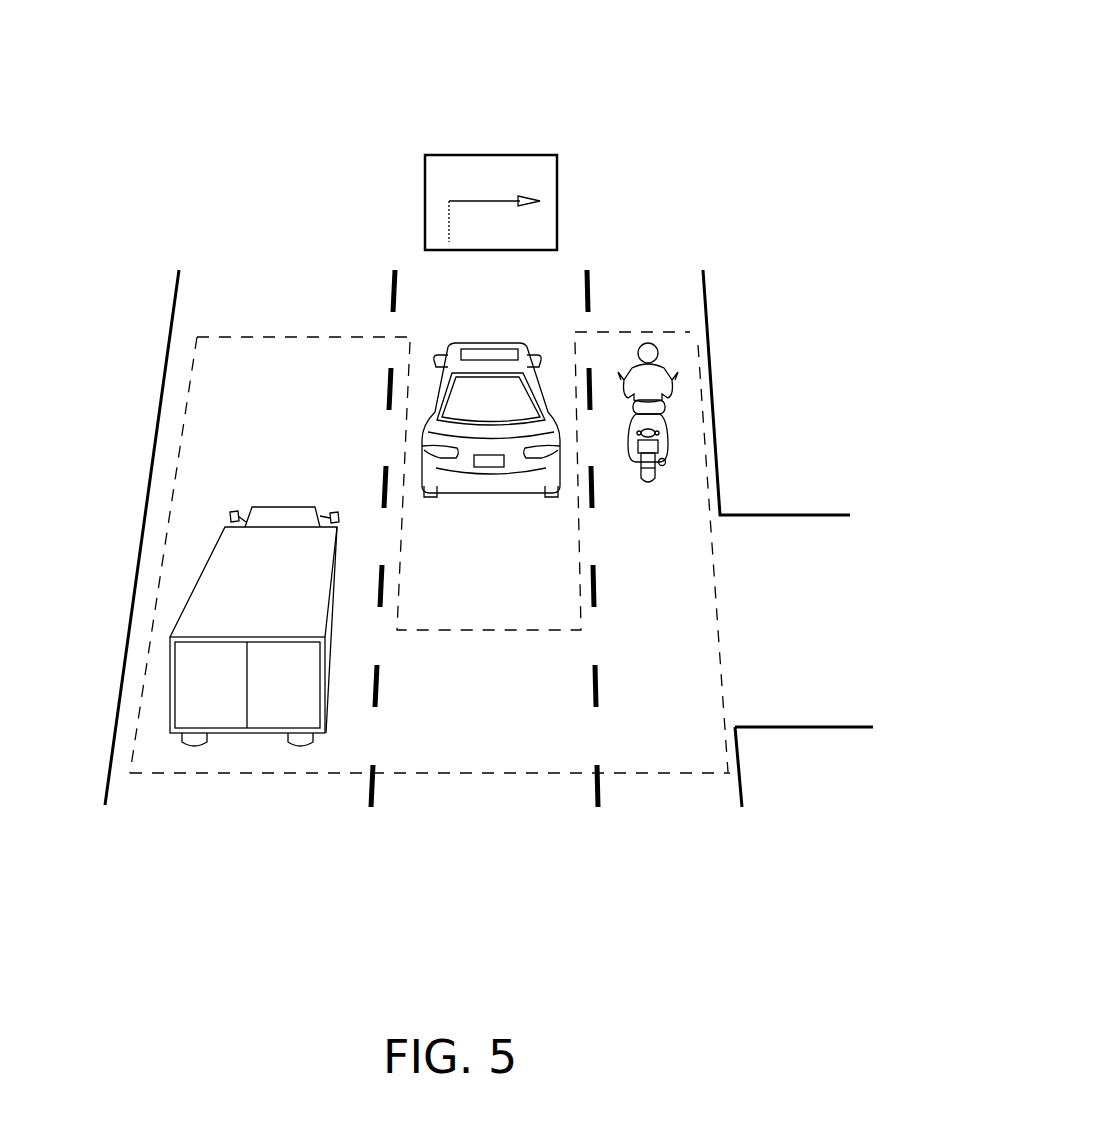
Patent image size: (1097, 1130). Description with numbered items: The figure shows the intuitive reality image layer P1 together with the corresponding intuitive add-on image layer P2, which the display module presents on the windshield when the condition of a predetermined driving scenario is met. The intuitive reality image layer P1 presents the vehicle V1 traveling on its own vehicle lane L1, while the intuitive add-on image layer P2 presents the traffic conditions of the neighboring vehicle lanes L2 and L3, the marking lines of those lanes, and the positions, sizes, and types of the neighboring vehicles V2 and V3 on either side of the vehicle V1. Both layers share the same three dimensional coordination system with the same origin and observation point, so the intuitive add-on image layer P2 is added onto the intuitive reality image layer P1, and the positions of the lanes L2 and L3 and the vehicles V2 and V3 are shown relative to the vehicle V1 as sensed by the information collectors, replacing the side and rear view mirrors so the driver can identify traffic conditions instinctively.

The intuitive reality image layer P1 is at (697, 80).
The intuitive add-on image layer P2 is at (663, 782).
The vehicle lane L1 is at (489, 509).
The neighboring vehicle lane L2 is at (270, 529).
The neighboring vehicle lane L3 is at (651, 552).
The vehicle V1 is at (490, 493).
The neighboring vehicle V2 is at (193, 596).
The neighboring vehicle V3 is at (683, 428).